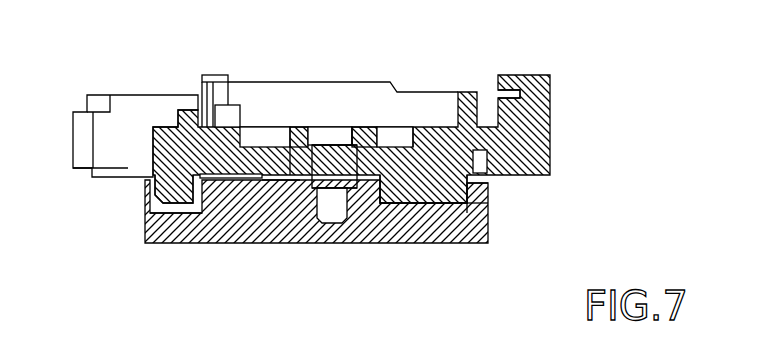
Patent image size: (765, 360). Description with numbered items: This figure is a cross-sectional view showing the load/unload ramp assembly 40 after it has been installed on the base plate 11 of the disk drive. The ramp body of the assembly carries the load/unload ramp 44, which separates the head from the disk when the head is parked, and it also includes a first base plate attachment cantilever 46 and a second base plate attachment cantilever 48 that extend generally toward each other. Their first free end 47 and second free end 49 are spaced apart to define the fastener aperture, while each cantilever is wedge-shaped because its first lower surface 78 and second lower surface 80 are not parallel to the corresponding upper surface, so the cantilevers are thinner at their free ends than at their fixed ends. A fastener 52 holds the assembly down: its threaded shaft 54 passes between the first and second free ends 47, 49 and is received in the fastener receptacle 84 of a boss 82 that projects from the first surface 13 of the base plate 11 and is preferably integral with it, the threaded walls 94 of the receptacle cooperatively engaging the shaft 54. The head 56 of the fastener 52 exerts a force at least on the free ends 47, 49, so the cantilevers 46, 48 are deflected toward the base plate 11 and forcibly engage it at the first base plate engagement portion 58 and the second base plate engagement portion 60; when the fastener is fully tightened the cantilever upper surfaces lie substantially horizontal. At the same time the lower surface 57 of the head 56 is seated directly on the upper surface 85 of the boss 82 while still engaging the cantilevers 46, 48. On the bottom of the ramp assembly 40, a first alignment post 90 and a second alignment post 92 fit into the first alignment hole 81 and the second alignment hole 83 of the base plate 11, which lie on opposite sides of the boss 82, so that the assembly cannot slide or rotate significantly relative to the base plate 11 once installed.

The base plate 11 is at (502, 219).
The first surface 13 is at (205, 172).
The load/unload ramp assembly 40 is at (562, 100).
The load/unload ramp 44 is at (502, 94).
The first base plate attachment cantilever 46 is at (257, 146).
The first free end 47 is at (300, 150).
The second base plate attachment cantilever 48 is at (425, 122).
The second free end 49 is at (365, 148).
The fastener 52 is at (340, 150).
The shaft 54 is at (336, 226).
The head 56 is at (290, 165).
The lower surface 57 is at (322, 150).
The first base plate engagement portion 58 is at (262, 182).
The second base plate engagement portion 60 is at (437, 220).
The first lower surface 78 is at (282, 180).
The second lower surface 80 is at (397, 178).
The first alignment hole 81 is at (164, 210).
The boss 82 is at (291, 163).
The second alignment hole 83 is at (465, 207).
The fastener receptacle 84 is at (342, 203).
The upper surface 85 is at (350, 148).
The first alignment post 90 is at (170, 192).
The second alignment post 92 is at (462, 190).
The threaded walls 94 is at (392, 152).